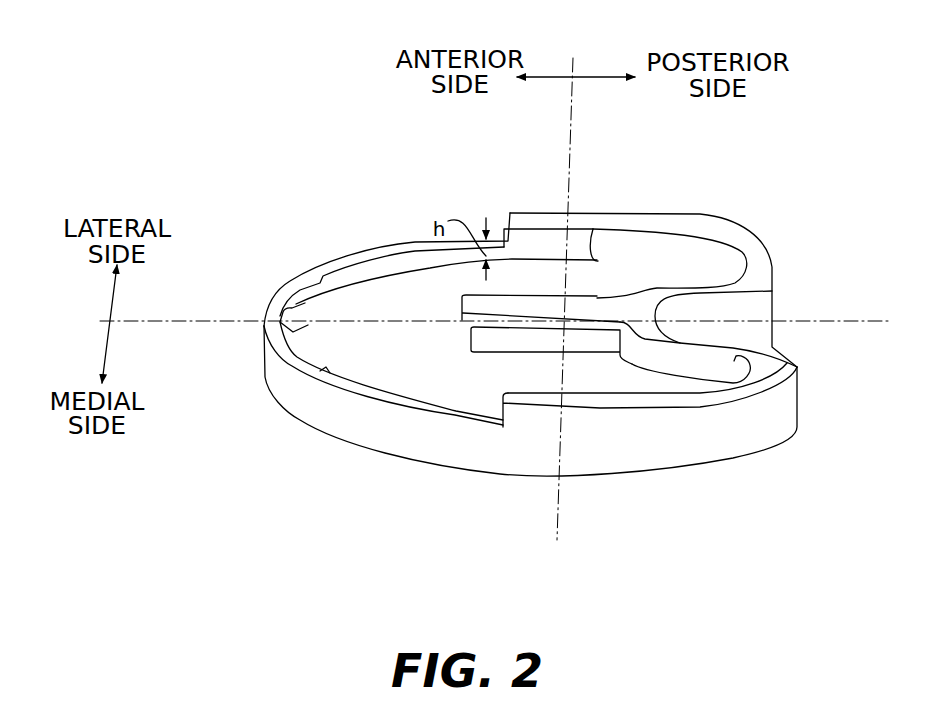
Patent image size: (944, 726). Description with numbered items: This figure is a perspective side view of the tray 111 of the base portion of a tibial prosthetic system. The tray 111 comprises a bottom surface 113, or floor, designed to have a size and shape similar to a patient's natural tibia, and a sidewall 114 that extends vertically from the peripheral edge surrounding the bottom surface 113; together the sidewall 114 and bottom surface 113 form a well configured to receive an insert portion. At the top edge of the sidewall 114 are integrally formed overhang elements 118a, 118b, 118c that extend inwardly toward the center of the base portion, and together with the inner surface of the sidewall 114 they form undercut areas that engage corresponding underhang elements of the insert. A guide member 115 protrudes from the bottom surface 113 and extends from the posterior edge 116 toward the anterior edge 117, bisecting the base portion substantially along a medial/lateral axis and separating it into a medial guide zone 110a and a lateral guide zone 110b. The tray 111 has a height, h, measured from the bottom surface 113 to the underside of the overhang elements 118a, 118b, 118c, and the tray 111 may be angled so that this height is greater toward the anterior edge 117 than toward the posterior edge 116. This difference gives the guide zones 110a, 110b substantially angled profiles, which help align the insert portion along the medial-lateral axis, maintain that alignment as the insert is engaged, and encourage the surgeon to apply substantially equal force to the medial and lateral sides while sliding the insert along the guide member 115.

The tray 111 is at (543, 308).
The medial guide zone 110a is at (523, 378).
The lateral guide zone 110b is at (598, 262).
The bottom surface 113 is at (383, 365).
The sidewall 114 is at (443, 432).
The guide member 115 is at (472, 301).
The posterior edge 116 is at (762, 312).
The anterior edge 117 is at (266, 314).
The overhang element 118a is at (754, 254).
The overhang element 118b is at (765, 374).
The overhang element 118c is at (294, 298).